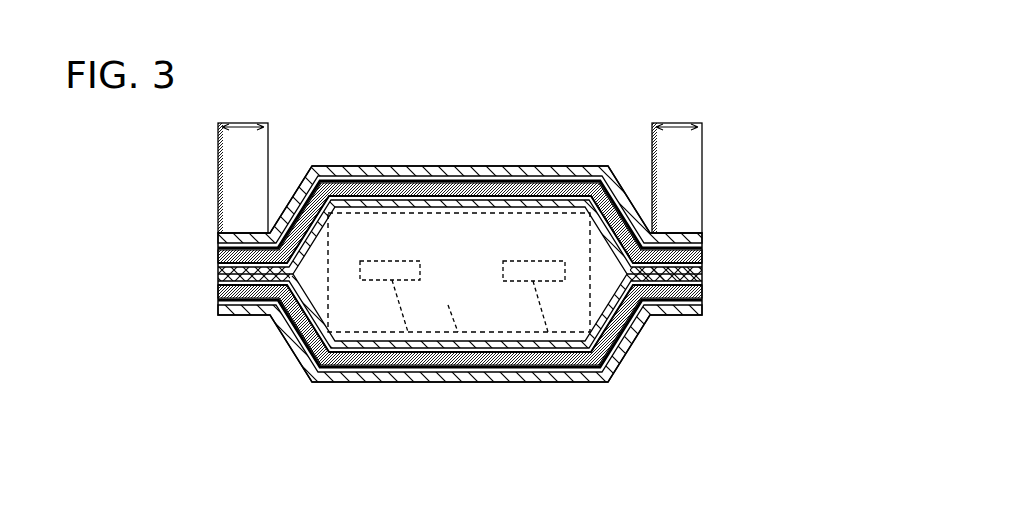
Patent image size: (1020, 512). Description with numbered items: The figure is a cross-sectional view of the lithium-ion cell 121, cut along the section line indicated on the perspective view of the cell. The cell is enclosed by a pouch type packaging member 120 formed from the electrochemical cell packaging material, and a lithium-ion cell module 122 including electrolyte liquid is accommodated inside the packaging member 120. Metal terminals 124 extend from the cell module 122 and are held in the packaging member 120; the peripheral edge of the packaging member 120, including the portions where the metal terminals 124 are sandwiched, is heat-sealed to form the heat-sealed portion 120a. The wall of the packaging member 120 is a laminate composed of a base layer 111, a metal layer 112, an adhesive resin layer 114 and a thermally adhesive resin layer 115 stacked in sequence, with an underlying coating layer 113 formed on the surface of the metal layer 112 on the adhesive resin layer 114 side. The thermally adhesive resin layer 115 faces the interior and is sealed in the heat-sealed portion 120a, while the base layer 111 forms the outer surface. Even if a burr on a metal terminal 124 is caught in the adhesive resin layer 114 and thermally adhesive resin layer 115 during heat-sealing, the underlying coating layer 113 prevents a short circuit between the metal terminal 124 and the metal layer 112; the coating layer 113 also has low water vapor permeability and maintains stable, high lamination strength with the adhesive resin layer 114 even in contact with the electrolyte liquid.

The base layer 111 is at (218, 237).
The metal layer 112 is at (218, 252).
The underlying coating layer 113 is at (348, 188).
The adhesive resin layer 114 is at (218, 268).
The thermally adhesive resin layer 115 is at (218, 281).
The packaging member 120 is at (301, 366).
The heat-sealed portion 120a is at (462, 159).
The lithium-ion cell 121 is at (748, 62).
The lithium-ion cell module 122 is at (460, 383).
The metal terminals 124 is at (402, 382).